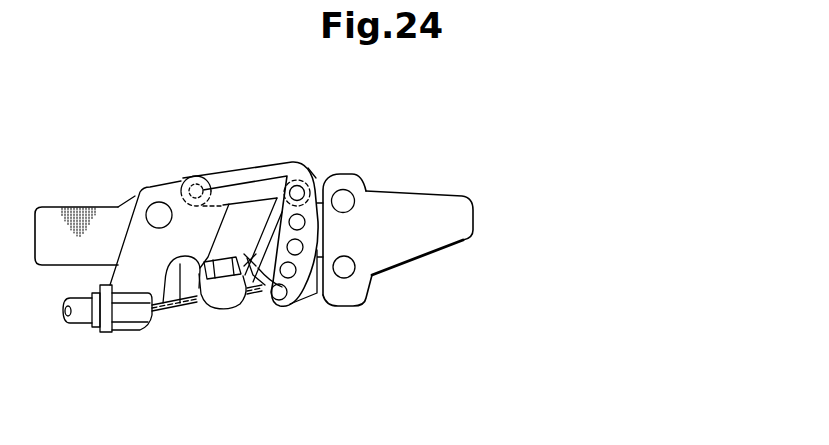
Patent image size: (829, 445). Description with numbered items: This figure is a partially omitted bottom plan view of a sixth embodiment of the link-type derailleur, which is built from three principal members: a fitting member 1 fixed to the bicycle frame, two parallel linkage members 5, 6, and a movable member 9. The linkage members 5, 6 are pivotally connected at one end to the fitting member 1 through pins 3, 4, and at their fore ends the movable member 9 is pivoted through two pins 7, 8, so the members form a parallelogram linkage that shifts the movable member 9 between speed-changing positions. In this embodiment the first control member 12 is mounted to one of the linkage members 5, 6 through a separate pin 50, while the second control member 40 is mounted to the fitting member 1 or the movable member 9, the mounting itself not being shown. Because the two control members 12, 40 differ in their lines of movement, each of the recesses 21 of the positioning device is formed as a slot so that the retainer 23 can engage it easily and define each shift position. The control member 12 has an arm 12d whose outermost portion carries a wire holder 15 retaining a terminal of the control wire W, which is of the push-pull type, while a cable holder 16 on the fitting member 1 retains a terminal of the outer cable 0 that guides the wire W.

The fitting member 1 is at (57, 207).
The pin 3 is at (155, 210).
The separate pin 50 is at (200, 188).
The control member 12 is at (264, 163).
The second control member 40 is at (293, 168).
The retainer 23 is at (313, 172).
The arm 12d is at (271, 296).
The recesses 21 is at (288, 295).
The linkage member 6 is at (318, 291).
The linkage member 5 is at (357, 173).
The pin 7 is at (347, 205).
The pin 8 is at (347, 272).
The movable member 9 is at (425, 197).
The outer cable 0 is at (80, 318).
The cable holder 16 is at (107, 330).
The pin 4 is at (165, 312).
The control wire W is at (198, 307).
The wire holder 15 is at (227, 313).